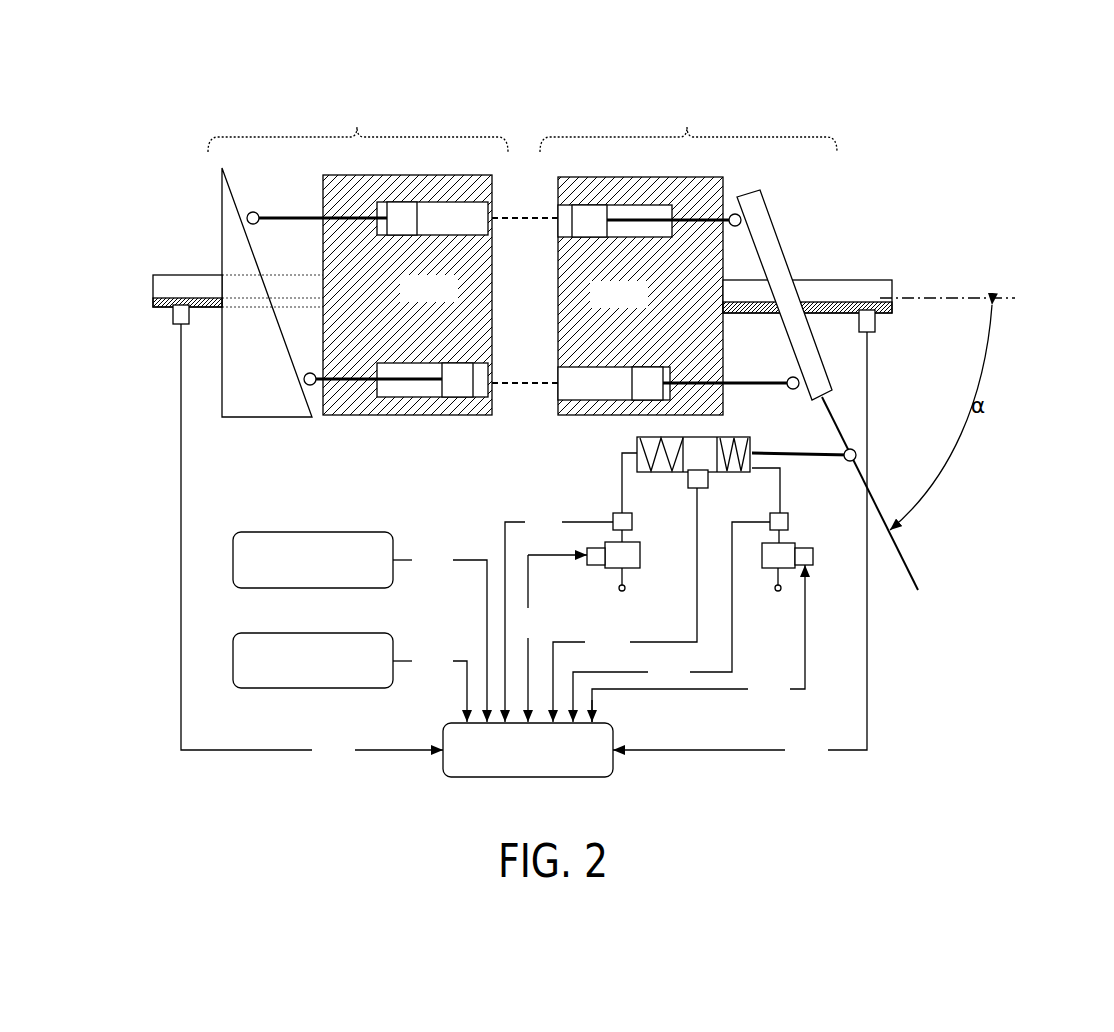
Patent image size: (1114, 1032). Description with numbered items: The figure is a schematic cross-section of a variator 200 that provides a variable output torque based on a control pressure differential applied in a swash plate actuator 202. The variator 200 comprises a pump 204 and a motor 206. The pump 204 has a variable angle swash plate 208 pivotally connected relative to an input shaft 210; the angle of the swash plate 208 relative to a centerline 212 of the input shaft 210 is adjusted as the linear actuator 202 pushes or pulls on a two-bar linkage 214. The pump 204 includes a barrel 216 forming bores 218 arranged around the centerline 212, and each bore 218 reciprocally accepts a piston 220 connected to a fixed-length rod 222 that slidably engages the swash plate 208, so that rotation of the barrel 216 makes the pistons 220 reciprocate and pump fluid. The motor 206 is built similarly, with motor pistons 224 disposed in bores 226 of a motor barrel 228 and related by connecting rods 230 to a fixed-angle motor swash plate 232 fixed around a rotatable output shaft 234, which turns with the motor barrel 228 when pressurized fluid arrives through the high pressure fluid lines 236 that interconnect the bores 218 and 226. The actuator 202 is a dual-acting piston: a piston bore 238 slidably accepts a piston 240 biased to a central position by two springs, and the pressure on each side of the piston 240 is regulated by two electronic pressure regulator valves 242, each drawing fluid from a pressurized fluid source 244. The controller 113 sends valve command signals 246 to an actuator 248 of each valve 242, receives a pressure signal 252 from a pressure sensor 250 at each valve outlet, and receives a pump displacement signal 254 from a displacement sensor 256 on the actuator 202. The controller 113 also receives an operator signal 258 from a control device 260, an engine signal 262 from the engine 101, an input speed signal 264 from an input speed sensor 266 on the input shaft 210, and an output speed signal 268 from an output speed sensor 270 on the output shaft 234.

The engine 101 is at (330, 688).
The controller 113 is at (575, 777).
The variator 200 is at (885, 150).
The swash plate actuator 202 is at (980, 473).
The pump 204 is at (688, 122).
The motor 206 is at (358, 121).
The variable angle swash plate 208 is at (803, 343).
The input shaft 210 is at (863, 292).
The centerline 212 is at (940, 297).
The two-bar linkage 214 is at (838, 415).
The barrel 216 is at (585, 412).
The bore 218 is at (623, 212).
The piston 220 is at (592, 230).
The rod 222 is at (755, 380).
The motor piston 224 is at (455, 365).
The motor bore 226 is at (403, 390).
The motor barrel 228 is at (453, 407).
The connecting rod 230 is at (294, 215).
The motor swash plate 232 is at (273, 405).
The output shaft 234 is at (167, 287).
The high pressure fluid lines 236 is at (520, 380).
The piston bore 238 is at (655, 470).
The piston 240 is at (703, 448).
The electronic pressure regulator valve 242 is at (745, 447).
The pressurized fluid source 244 is at (625, 592).
The valve command signal 246 is at (658, 638).
The actuator 248 is at (595, 557).
The pressure sensor 250 is at (617, 515).
The pressure signal 252 is at (637, 616).
The pump displacement signal 254 is at (625, 605).
The displacement sensor 256 is at (708, 480).
The operator signal 258 is at (440, 635).
The control device 260 is at (302, 532).
The engine signal 262 is at (430, 685).
The input speed signal 264 is at (740, 547).
The input speed sensor 266 is at (876, 320).
The output speed signal 268 is at (312, 543).
The output speed sensor 270 is at (180, 318).